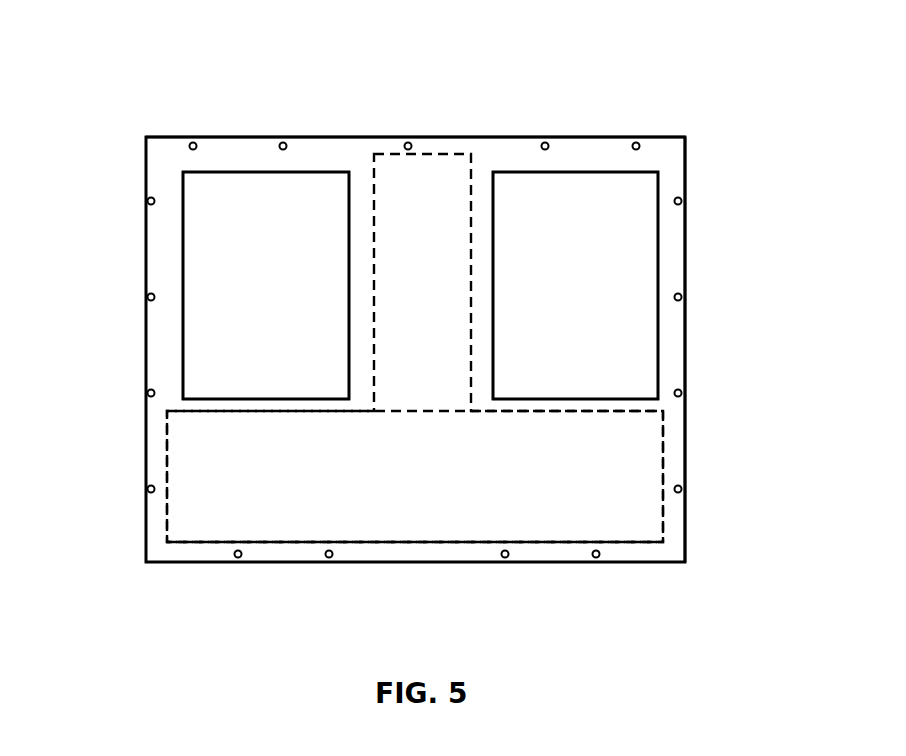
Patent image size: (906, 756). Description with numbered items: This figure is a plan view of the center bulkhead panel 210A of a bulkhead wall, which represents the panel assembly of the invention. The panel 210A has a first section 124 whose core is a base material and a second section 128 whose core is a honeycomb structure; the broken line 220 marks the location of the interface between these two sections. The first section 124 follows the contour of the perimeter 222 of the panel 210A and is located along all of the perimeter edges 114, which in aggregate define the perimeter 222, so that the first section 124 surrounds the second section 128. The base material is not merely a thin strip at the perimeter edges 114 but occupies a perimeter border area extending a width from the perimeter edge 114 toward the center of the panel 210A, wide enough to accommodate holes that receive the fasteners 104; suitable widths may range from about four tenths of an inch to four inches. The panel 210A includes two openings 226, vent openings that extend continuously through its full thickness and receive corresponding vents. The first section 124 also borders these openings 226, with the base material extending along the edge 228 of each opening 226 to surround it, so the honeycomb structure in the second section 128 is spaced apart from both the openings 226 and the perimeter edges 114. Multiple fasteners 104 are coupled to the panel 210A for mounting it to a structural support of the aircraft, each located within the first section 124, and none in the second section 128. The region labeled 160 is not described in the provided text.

The center bulkhead panel 210A is at (118, 91).
The perimeter edges 114 is at (578, 137).
The perimeter 222 is at (685, 245).
The first section 124 is at (219, 158).
The fasteners 104 is at (148, 201).
The openings 226 is at (302, 192).
The edge of opening 228 is at (349, 268).
The broken line 220 is at (471, 177).
The second section 128 is at (445, 474).
The lower region boundary 160 is at (520, 509).